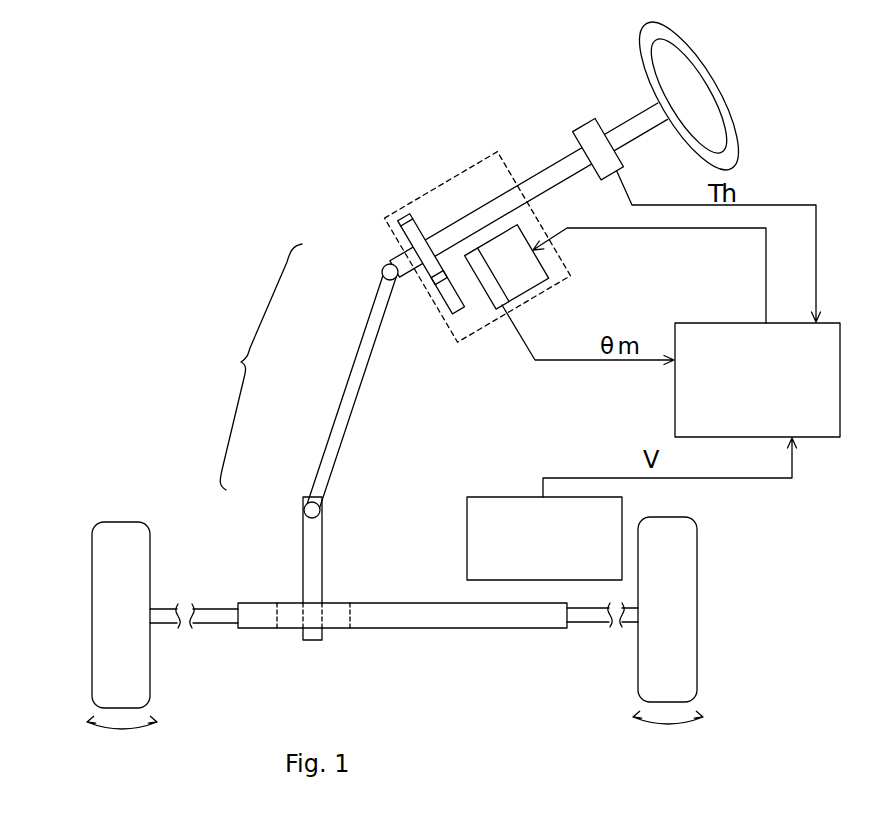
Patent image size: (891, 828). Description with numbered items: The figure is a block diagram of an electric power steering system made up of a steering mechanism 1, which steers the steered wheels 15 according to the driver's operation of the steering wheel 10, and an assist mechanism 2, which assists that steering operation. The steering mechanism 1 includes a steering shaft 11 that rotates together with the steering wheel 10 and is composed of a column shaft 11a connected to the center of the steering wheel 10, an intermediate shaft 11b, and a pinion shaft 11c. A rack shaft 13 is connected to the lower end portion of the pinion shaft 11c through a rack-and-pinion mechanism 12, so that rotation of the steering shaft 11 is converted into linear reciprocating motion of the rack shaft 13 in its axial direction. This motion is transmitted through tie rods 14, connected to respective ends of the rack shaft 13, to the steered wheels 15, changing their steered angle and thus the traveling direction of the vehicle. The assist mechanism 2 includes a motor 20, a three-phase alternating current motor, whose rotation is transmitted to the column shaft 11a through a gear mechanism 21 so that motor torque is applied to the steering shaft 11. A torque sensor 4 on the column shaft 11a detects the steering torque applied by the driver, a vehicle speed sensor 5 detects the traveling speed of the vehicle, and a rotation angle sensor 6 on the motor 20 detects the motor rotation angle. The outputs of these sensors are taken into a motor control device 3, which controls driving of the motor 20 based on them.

The steering mechanism 1 is at (492, 74).
The assist mechanism 2 is at (453, 173).
The motor control device 3 is at (840, 355).
The torque sensor 4 is at (583, 125).
The vehicle speed sensor 5 is at (490, 496).
The rotation angle sensor 6 is at (491, 310).
The steering wheel 10 is at (717, 88).
The steering shaft 11 is at (257, 367).
The column shaft 11a is at (382, 266).
The intermediate shaft 11b is at (347, 381).
The pinion shaft 11c is at (303, 524).
The rack-and-pinion mechanism 12 is at (349, 622).
The rack shaft 13 is at (423, 602).
The tie rods 14 is at (213, 629).
The steered wheels 15 is at (92, 616).
The motor 20 is at (550, 268).
The gear mechanism 21 is at (437, 290).